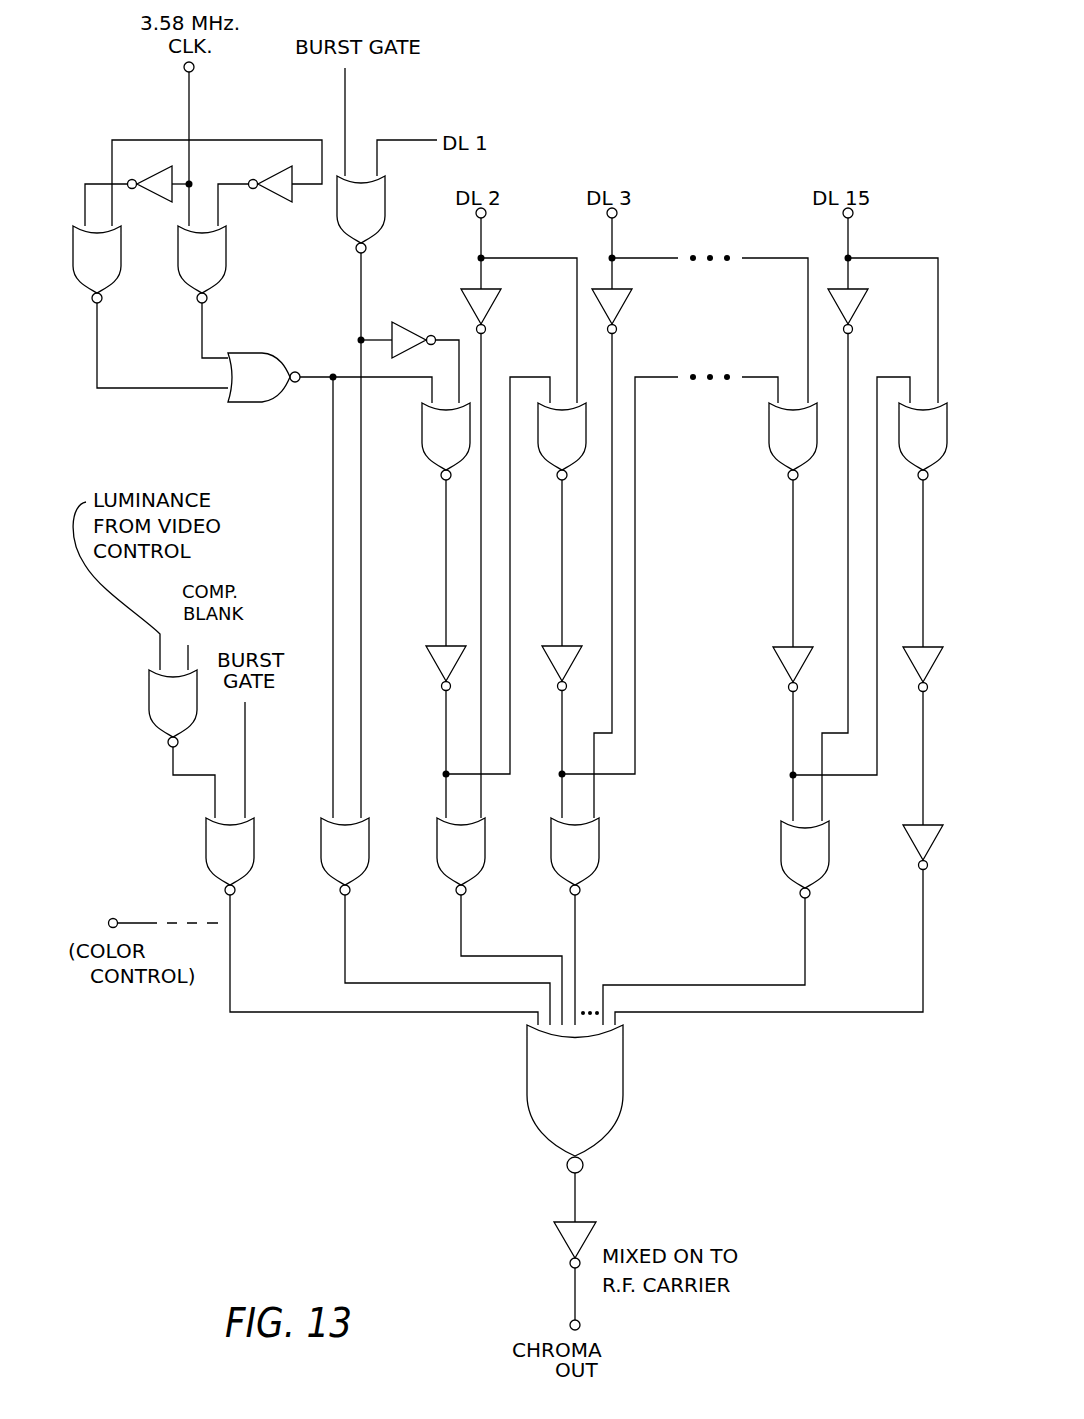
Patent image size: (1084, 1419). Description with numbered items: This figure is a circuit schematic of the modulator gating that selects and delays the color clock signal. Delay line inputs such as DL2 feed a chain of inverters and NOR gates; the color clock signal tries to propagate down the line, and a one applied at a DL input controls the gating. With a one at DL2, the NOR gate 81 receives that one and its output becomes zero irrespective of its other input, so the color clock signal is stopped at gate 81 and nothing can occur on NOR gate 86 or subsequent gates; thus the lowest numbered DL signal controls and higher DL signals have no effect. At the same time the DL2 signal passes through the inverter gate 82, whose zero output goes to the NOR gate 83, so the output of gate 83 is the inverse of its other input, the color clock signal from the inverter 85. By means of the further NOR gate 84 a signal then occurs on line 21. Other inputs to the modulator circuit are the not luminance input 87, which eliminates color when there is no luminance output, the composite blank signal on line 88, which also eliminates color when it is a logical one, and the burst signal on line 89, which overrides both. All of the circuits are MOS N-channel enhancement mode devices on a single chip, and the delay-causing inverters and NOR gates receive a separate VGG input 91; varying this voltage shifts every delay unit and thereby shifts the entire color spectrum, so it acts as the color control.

The line 21 is at (572, 1293).
The NOR gate 81 is at (577, 460).
The inverter gate 82 is at (492, 313).
The NOR gate 83 is at (483, 868).
The NOR gate 84 is at (620, 1102).
The inverter 85 is at (435, 662).
The NOR gate 86 is at (597, 868).
The not luminance input 87 is at (157, 650).
The line 88 is at (188, 643).
The line 89 is at (247, 783).
The VGG input 91 is at (172, 920).